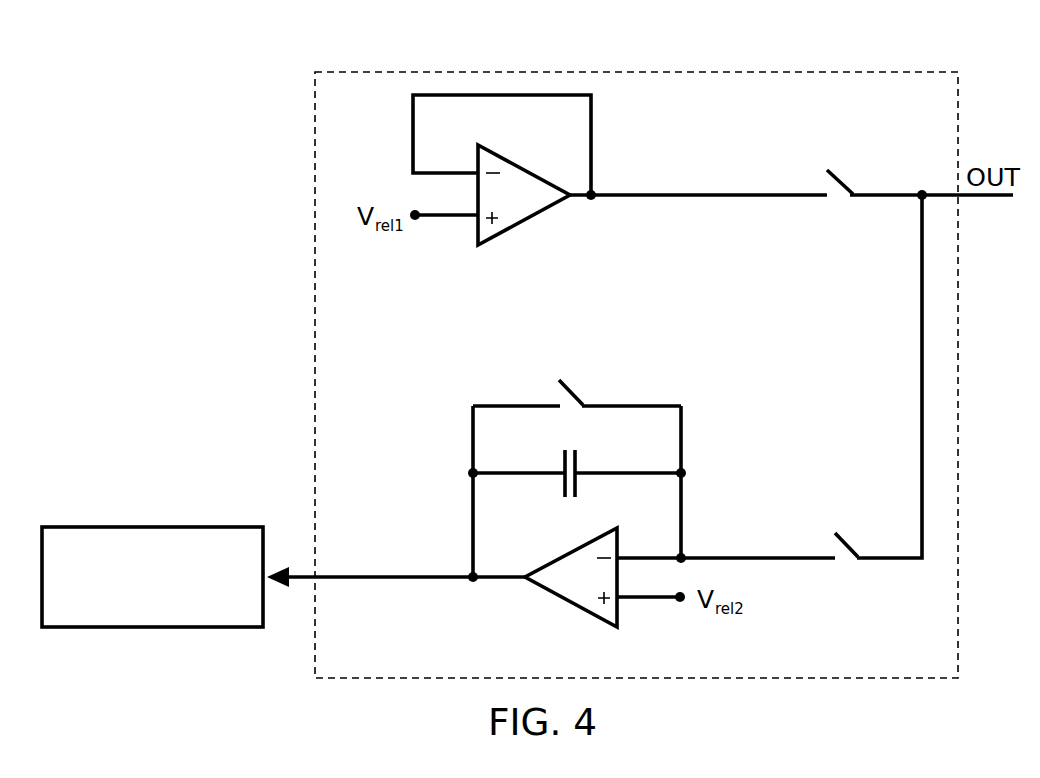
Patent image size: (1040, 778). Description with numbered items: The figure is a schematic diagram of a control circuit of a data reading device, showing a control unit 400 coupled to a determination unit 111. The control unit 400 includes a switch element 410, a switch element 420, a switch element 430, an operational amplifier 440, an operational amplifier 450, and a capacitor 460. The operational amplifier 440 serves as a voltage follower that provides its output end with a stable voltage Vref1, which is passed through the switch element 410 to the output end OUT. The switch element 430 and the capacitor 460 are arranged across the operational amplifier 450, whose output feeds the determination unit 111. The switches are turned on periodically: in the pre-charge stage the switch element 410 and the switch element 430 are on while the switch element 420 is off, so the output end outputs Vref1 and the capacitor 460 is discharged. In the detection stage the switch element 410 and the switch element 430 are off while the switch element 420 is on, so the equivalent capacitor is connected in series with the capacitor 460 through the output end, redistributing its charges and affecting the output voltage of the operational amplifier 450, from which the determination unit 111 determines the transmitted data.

The control unit 400 is at (377, 72).
The switch element 410 is at (813, 173).
The switch element 420 is at (833, 568).
The switch element 430 is at (530, 385).
The operational amplifier 440 is at (510, 228).
The operational amplifier 450 is at (556, 597).
The capacitor 460 is at (583, 443).
The determination unit 111 is at (185, 527).